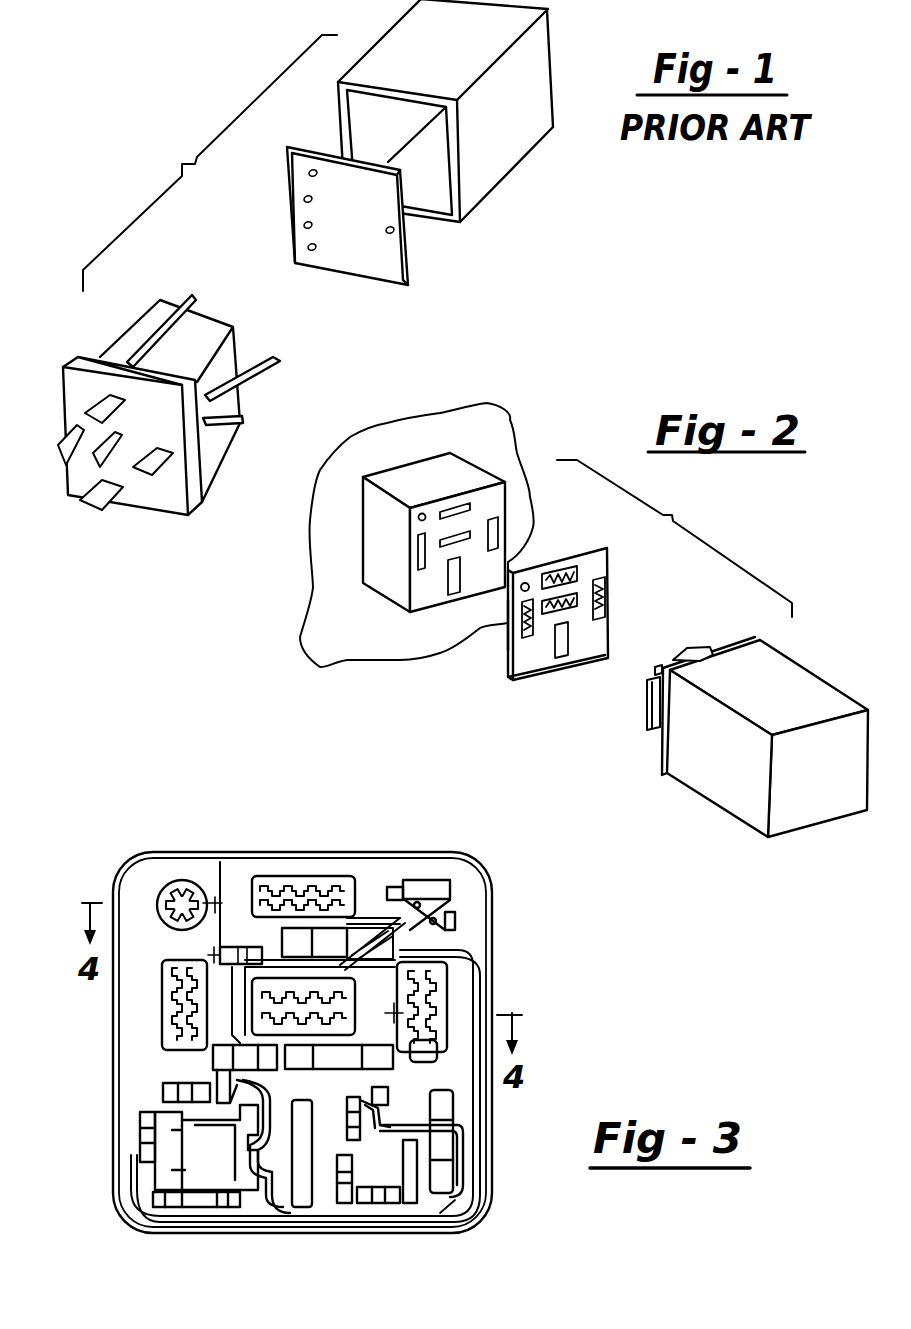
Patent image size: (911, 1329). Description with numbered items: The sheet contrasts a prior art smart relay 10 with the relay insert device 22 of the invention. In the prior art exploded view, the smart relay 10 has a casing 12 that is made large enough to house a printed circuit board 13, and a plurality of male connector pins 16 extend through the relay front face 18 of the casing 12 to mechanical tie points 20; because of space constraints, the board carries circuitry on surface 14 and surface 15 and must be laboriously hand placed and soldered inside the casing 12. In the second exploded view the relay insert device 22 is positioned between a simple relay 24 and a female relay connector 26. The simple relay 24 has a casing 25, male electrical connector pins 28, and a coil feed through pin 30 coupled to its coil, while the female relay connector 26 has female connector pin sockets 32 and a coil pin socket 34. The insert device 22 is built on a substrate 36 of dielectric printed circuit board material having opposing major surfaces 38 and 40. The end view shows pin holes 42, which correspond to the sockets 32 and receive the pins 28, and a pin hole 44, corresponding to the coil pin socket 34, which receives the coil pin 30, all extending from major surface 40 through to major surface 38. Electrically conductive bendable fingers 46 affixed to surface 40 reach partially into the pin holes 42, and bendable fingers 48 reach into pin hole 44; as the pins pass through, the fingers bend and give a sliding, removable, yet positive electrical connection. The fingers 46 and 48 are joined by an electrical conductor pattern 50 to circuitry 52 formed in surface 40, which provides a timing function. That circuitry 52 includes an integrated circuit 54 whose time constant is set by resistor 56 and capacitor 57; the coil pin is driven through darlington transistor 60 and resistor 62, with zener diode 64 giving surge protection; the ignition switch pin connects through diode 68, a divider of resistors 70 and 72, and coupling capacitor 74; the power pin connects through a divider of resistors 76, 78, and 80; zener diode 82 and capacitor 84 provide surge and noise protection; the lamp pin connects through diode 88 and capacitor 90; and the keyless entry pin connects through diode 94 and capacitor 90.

In FIG. 1, the smart relay 10 is at (192, 156).
In FIG. 1, the casing 12 is at (515, 150).
In FIG. 1, the printed circuit board 13 is at (426, 309).
In FIG. 1, the surface 14 is at (378, 268).
In FIG. 1, the surface 15 is at (410, 255).
In FIG. 1, the male connector pins 16 is at (100, 510).
In FIG. 1, the relay front face 18 is at (162, 503).
In FIG. 1, the mechanical tie points 20 is at (283, 357).
In FIG. 2, the relay insert device 22 is at (495, 689).
In FIG. 3, the relay insert device 22 is at (116, 850).
In FIG. 2, the simple relay 24 is at (822, 655).
In FIG. 2, the casing 25 is at (707, 778).
In FIG. 2, the female relay connector 26 is at (324, 620).
In FIG. 2, the male electrical connector pins 28 is at (705, 647).
In FIG. 2, the coil feed through pin 30 is at (657, 667).
In FIG. 2, the female connector pin sockets 32 is at (467, 503).
In FIG. 2, the coil pin socket 34 is at (428, 515).
In FIG. 2, the substrate 36 is at (590, 553).
In FIG. 3, the substrate 36 is at (113, 1172).
In FIG. 2, the major surface 38 is at (508, 622).
In FIG. 2, the major surface 40 is at (513, 655).
In FIG. 3, the major surface 40 is at (130, 890).
In FIG. 3, the pin holes 42 is at (297, 890).
In FIG. 3, the pin hole 44 is at (183, 903).
In FIG. 3, the electrically conductive bendable fingers 46 is at (333, 883).
In FIG. 3, the electrically conductive bendable fingers 48 is at (183, 932).
In FIG. 3, the electrical conductor pattern 50 is at (243, 983).
In FIG. 3, the circuitry 52 is at (140, 1103).
In FIG. 3, the integrated circuit 54 is at (243, 1170).
In FIG. 3, the resistor 56 is at (163, 1090).
In FIG. 3, the capacitor 57 is at (140, 1137).
In FIG. 3, the darlington transistor 60 is at (445, 937).
In FIG. 3, the resistor 62 is at (218, 858).
In FIG. 3, the zener diode 64 is at (422, 888).
In FIG. 3, the diode 68 is at (443, 1153).
In FIG. 3, the resistor 70 is at (390, 1235).
In FIG. 3, the resistor 72 is at (457, 1237).
In FIG. 3, the coupling capacitor 74 is at (347, 1197).
In FIG. 3, the resistor 76 is at (182, 1155).
In FIG. 3, the resistor 78 is at (217, 1070).
In FIG. 3, the resistor 80 is at (223, 1203).
In FIG. 3, the zener diode 82 is at (353, 1120).
In FIG. 3, the capacitor 84 is at (410, 1180).
In FIG. 3, the diode 88 is at (327, 943).
In FIG. 3, the capacitor 90 is at (173, 1203).
In FIG. 3, the diode 94 is at (325, 1190).